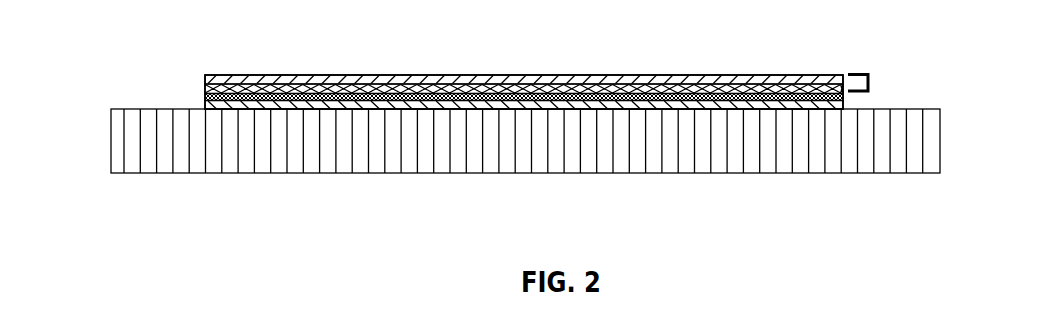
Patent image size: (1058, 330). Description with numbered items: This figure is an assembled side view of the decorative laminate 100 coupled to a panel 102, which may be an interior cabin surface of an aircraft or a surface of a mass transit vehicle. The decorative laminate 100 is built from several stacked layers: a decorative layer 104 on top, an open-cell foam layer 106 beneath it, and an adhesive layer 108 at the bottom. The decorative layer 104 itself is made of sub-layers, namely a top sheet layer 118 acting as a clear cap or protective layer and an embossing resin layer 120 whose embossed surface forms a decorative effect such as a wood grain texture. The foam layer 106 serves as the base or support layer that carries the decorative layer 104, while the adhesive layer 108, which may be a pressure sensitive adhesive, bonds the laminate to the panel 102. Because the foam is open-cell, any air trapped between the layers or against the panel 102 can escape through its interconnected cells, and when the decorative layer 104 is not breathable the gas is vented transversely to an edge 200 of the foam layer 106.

The decorative laminate 100 is at (207, 63).
The panel 102 is at (123, 108).
The decorative layer 104 is at (869, 83).
The open-cell foam layer 106 is at (843, 93).
The adhesive layer 108 is at (843, 102).
The top sheet layer 118 is at (771, 82).
The embossing resin layer 120 is at (800, 92).
The edge 200 is at (205, 96).